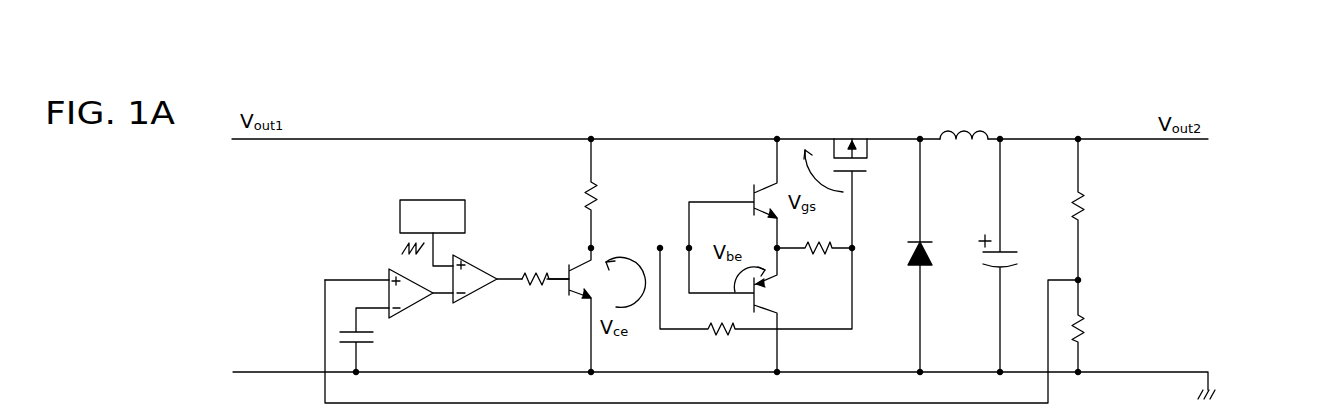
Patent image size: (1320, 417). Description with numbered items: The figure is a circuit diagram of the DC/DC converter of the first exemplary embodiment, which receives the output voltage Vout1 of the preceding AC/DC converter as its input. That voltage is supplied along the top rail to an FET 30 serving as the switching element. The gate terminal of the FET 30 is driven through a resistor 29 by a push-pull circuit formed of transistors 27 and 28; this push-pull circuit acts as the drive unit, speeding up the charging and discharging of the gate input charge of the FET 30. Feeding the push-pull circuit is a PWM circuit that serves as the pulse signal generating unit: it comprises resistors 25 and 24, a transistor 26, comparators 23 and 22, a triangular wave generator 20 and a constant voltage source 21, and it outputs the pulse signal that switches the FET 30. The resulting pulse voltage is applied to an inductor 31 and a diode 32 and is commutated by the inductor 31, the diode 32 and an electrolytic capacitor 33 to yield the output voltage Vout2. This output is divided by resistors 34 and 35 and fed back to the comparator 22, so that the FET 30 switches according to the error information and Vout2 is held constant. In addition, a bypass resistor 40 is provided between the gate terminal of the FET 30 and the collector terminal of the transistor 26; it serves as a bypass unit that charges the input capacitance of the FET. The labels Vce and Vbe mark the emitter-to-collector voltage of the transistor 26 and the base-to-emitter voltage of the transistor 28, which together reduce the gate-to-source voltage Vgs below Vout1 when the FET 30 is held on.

The triangular wave generator 20 is at (408, 199).
The constant voltage source 21 is at (372, 342).
The comparator 22 is at (421, 305).
The comparator 23 is at (482, 290).
The resistor 24 is at (536, 285).
The resistor 25 is at (589, 190).
The transistor 26 is at (567, 268).
The transistor 27 is at (752, 189).
The transistor 28 is at (766, 303).
The resistor 29 is at (824, 253).
The FET 30 is at (859, 171).
The inductor 31 is at (965, 147).
The diode 32 is at (927, 265).
The electrolytic capacitor 33 is at (1008, 250).
The resistor 34 is at (1083, 193).
The resistor 35 is at (1083, 315).
The bypass resistor 40 is at (732, 332).